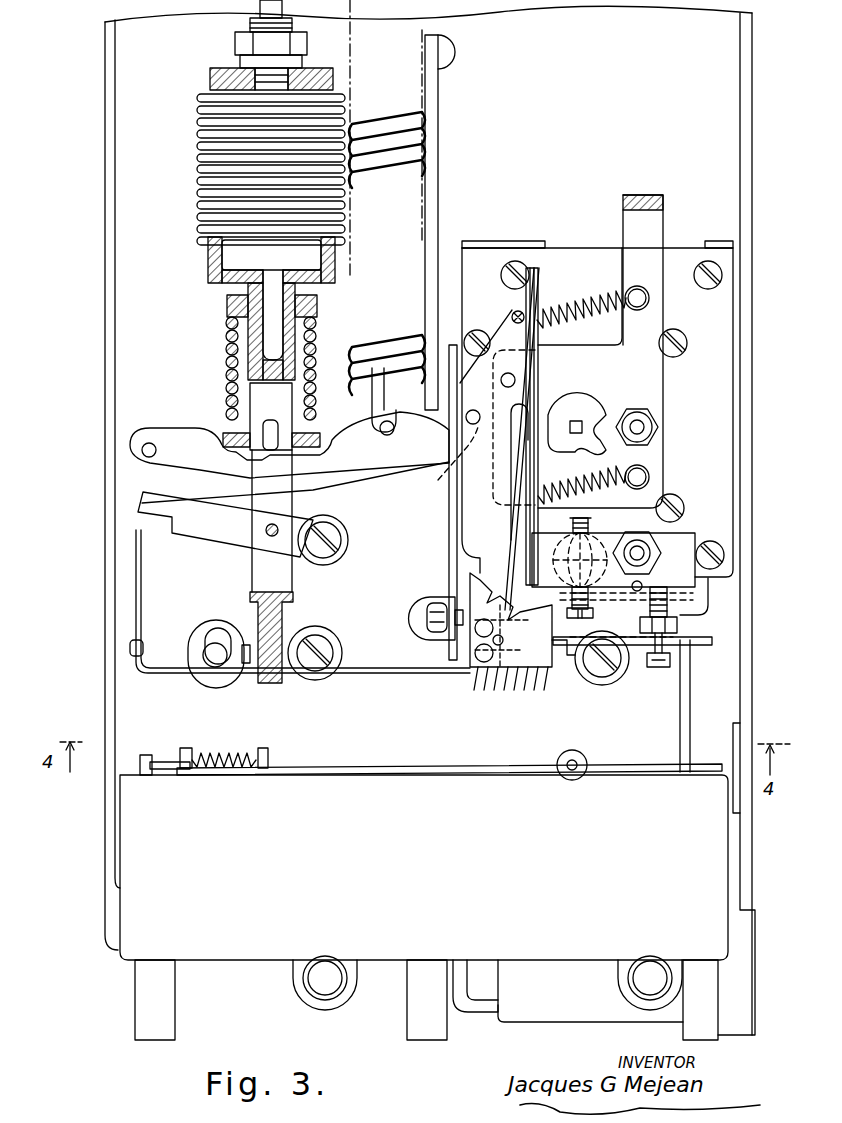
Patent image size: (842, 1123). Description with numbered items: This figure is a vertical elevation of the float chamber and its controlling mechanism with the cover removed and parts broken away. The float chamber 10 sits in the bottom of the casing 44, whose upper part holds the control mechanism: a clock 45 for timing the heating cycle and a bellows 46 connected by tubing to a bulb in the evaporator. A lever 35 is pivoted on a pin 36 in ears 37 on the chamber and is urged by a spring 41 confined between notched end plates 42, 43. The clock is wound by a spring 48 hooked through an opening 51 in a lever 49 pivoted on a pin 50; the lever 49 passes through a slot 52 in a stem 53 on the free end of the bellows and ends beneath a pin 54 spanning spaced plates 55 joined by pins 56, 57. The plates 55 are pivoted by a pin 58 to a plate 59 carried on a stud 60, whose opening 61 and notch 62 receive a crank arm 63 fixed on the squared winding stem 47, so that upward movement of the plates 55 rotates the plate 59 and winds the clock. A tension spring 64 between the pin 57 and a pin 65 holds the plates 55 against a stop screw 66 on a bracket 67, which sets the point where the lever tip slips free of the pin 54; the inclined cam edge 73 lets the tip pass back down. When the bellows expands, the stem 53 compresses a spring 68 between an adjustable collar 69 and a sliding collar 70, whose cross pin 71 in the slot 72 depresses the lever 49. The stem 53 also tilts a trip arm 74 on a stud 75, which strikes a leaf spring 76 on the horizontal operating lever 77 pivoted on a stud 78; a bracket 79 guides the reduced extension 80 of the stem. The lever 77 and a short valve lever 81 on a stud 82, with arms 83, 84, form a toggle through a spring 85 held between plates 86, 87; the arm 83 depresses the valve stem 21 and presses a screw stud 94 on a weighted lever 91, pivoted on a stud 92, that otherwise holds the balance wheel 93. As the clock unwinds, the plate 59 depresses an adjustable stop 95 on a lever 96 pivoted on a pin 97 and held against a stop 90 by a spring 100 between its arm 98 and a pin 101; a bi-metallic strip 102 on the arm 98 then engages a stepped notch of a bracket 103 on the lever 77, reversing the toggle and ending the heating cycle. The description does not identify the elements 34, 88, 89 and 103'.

The float chamber 10 is at (230, 958).
The valve stem 21 is at (685, 728).
The contact member 34 is at (147, 756).
The lever 35 is at (300, 768).
The pin 36 is at (557, 765).
The ears 37 is at (585, 758).
The spring 41 is at (235, 754).
The end plate 42 is at (186, 748).
The end plate 43 is at (268, 752).
The casing 44 is at (105, 210).
The clock 45 is at (565, 248).
The bellows 46 is at (200, 142).
The winding stem 47 is at (585, 425).
The spring 48 is at (425, 160).
The lever 49 is at (345, 468).
The pin 50 is at (142, 450).
The opening 51 is at (378, 410).
The slot 52 is at (250, 400).
The stem 53 is at (228, 313).
The pin 54 is at (474, 410).
The spaced plates 55 is at (458, 515).
The pin 56 is at (503, 640).
The pin 57 is at (512, 313).
The pin 58 is at (505, 378).
The plate 59 is at (650, 325).
The stud 60 is at (652, 427).
The opening 61 is at (585, 380).
The notch 62 is at (515, 460).
The crank arm 63 is at (577, 420).
The tension spring 64 is at (565, 300).
The pin 65 is at (650, 298).
The stop screw 66 is at (455, 640).
The bracket 67 is at (420, 635).
The spring 68 is at (225, 355).
The collar 69 is at (240, 292).
The collar 70 is at (235, 450).
The cross pin 71 is at (276, 452).
The longitudinal slot 72 is at (272, 425).
The inclined edge 73 is at (435, 480).
The trip arm 74 is at (200, 540).
The stud 75 is at (268, 536).
The leaf spring 76 is at (136, 592).
The operating lever 77 is at (172, 675).
The stud 78 is at (325, 640).
The bracket 79 is at (288, 675).
The reduced extension 80 is at (258, 612).
The valve lever 81 is at (618, 640).
The horizontal stud 82 is at (605, 685).
The arm 83 is at (702, 646).
The arm 84 is at (575, 660).
The spring 85 is at (508, 690).
The plate 86 is at (478, 690).
The plate 87 is at (545, 690).
The pin 88 is at (218, 668).
The loop 89 is at (200, 625).
The stop 90 is at (650, 668).
The lever 91 is at (643, 585).
The horizontal stud 92 is at (622, 560).
The balance wheel 93 is at (525, 578).
The screw stud 94 is at (685, 625).
The adjustable stop 95 is at (590, 528).
The lever 96 is at (690, 540).
The pin 97 is at (645, 545).
The arm 98 is at (535, 362).
The spring 100 is at (650, 470).
The pin 101 is at (650, 477).
The bi-metallic strip 102 is at (520, 520).
The bracket 103 is at (436, 679).
The bar 103' is at (629, 351).